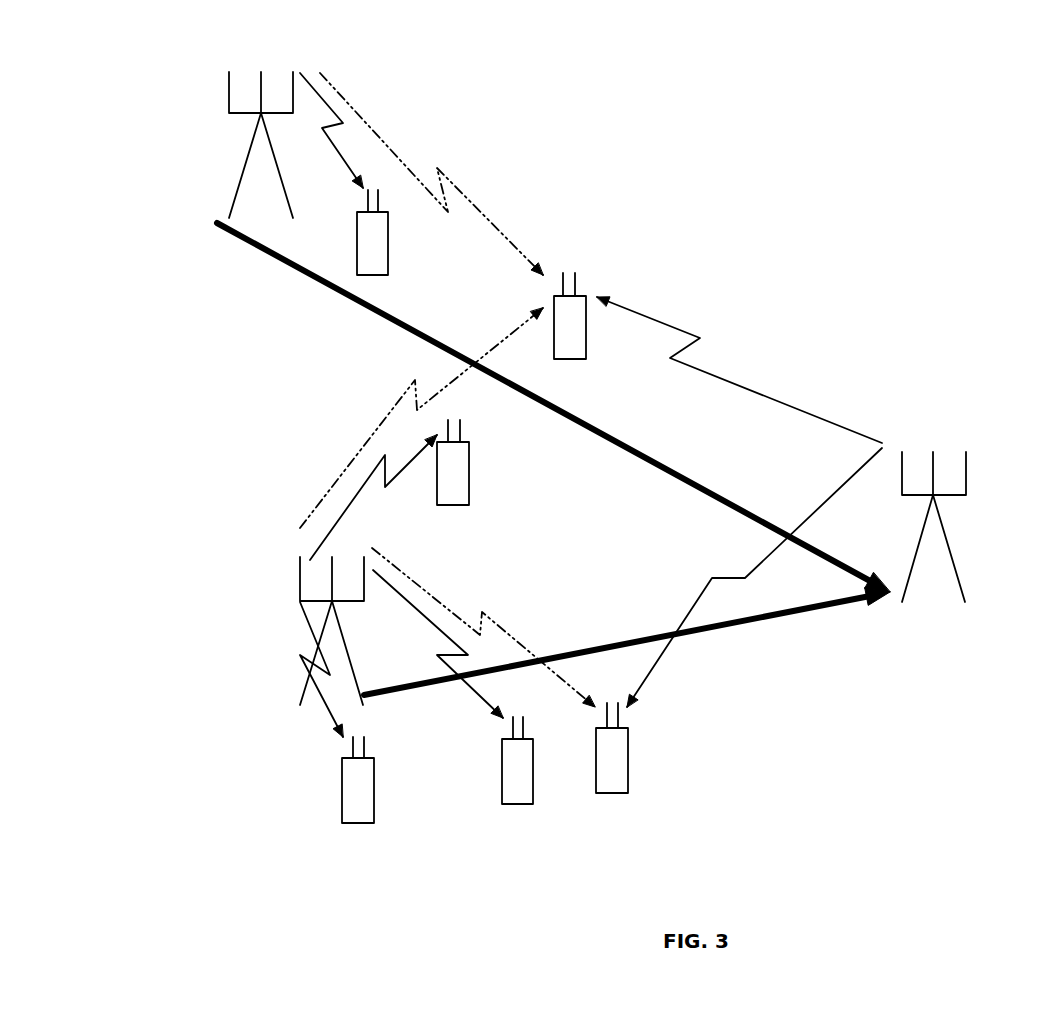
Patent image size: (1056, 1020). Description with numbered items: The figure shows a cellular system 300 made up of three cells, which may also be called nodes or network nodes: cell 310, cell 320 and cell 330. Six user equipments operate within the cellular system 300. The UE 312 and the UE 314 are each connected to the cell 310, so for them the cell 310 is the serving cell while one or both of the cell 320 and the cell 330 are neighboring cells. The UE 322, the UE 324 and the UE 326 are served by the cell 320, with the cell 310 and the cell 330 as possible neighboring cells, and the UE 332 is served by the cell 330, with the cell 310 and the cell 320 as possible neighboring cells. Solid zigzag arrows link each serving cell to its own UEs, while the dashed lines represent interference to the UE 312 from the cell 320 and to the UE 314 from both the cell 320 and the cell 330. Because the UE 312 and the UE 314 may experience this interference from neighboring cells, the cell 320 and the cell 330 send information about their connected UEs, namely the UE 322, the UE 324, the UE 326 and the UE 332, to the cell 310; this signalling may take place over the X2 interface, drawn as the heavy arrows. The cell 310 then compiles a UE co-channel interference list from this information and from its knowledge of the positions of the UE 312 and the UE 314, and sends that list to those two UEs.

The cellular system 300 is at (707, 867).
The cell 310 is at (804, 502).
The UE 312 is at (635, 748).
The UE 314 is at (593, 320).
The cell 320 is at (377, 586).
The UE 322 is at (477, 462).
The UE 324 is at (493, 760).
The UE 326 is at (334, 780).
The cell 330 is at (275, 145).
The UE 332 is at (394, 232).